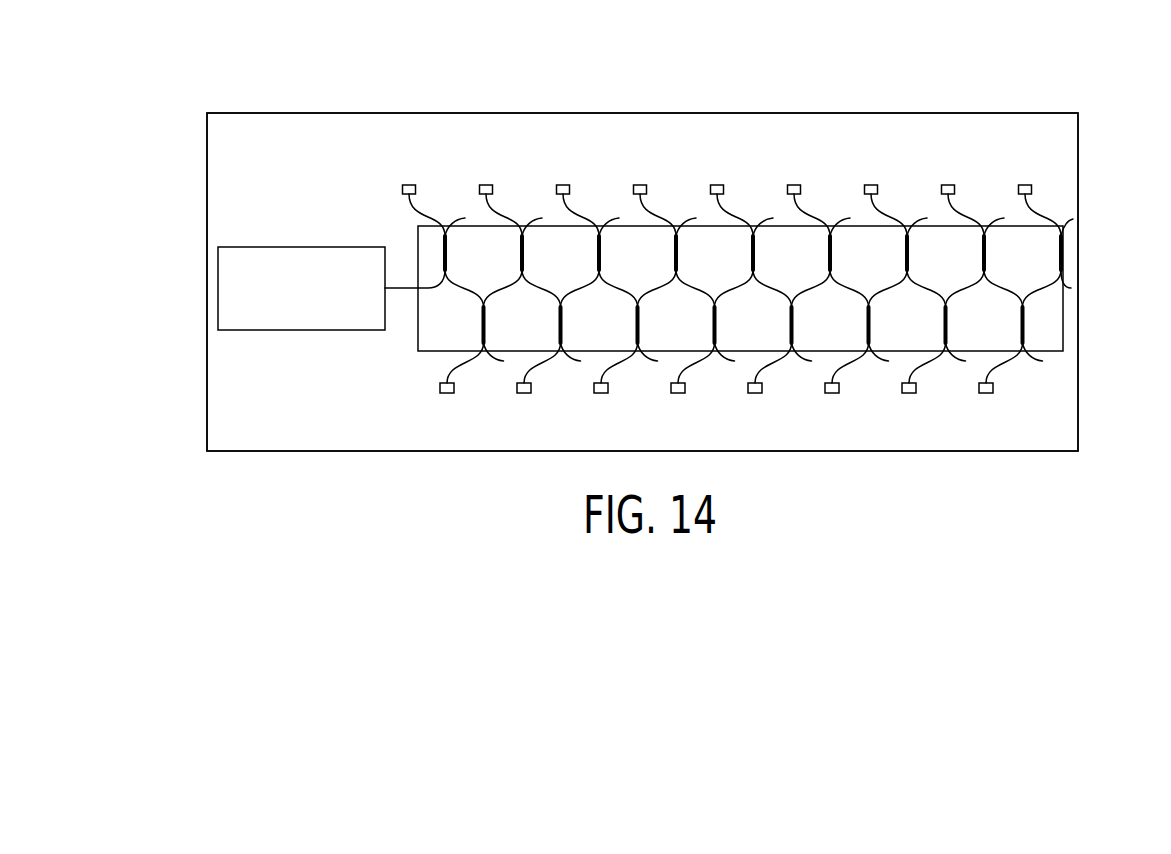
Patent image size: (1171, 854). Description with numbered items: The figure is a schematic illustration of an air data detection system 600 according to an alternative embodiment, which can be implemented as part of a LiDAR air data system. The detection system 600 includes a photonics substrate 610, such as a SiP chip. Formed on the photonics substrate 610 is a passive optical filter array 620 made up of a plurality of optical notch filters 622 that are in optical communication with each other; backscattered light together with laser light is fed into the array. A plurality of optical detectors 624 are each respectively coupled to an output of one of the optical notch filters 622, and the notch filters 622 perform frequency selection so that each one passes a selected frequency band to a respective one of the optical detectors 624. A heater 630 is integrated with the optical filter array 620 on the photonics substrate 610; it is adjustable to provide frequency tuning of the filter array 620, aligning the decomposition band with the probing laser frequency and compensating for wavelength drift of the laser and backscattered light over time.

The air data detection system 600 is at (860, 102).
The photonics substrate 610 is at (1008, 157).
The passive optical filter array 620 is at (1058, 304).
The optical notch filters 622 is at (655, 223).
The optical detectors 624 is at (639, 184).
The heater 630 is at (437, 330).